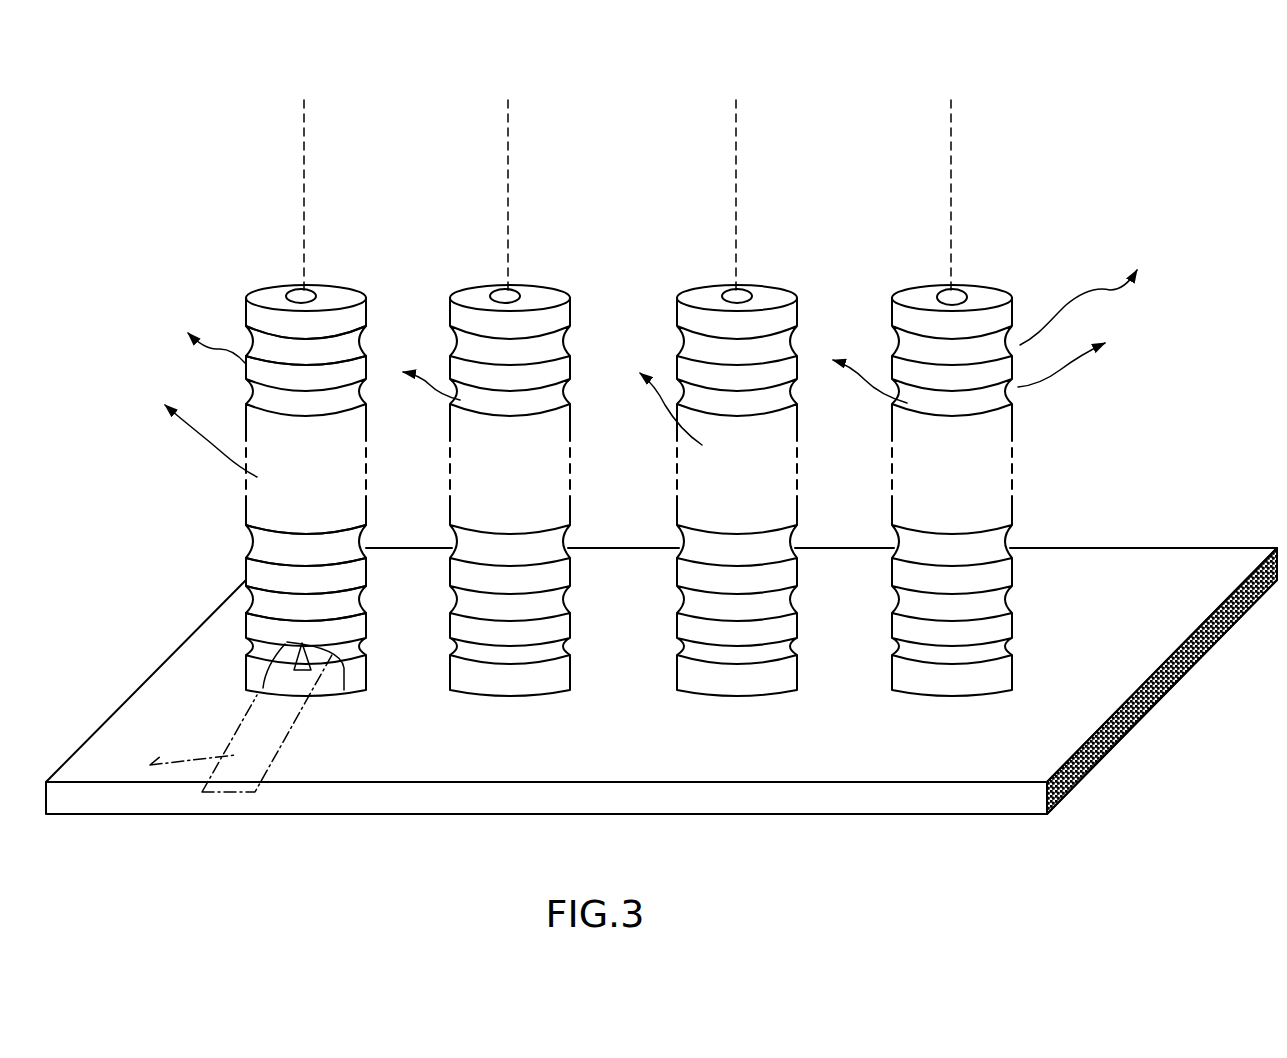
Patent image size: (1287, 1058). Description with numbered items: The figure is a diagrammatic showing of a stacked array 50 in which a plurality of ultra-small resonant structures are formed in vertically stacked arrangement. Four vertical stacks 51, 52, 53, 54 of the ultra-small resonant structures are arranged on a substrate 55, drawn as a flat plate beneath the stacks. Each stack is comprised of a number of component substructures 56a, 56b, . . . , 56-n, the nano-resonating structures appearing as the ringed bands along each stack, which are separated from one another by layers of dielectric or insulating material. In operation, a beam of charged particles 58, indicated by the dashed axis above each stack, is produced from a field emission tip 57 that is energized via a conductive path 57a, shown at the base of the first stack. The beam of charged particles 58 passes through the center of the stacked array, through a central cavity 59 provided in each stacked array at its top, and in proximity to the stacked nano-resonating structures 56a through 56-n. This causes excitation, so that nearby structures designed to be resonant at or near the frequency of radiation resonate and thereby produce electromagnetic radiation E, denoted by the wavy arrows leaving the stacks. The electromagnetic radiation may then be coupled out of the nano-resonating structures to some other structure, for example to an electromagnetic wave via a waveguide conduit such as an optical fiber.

The stacked array 50 is at (1083, 452).
The vertical stack 51 is at (355, 292).
The vertical stack 52 is at (558, 293).
The vertical stack 53 is at (783, 292).
The vertical stack 54 is at (1002, 292).
The substrate 55 is at (1038, 753).
The component substructure 56a is at (237, 603).
The component substructure 56b is at (237, 545).
The component substructure 56-n is at (231, 336).
The field emission tip 57 is at (305, 670).
The conductive path 57a is at (241, 722).
The beam of charged particles 58 is at (304, 197).
The central cavity 59 is at (294, 293).
The electromagnetic radiation E is at (645, 361).